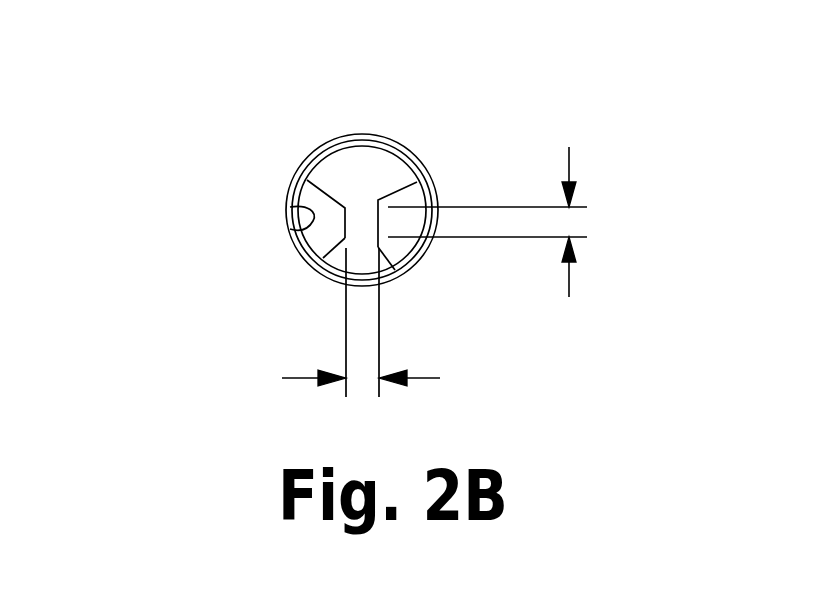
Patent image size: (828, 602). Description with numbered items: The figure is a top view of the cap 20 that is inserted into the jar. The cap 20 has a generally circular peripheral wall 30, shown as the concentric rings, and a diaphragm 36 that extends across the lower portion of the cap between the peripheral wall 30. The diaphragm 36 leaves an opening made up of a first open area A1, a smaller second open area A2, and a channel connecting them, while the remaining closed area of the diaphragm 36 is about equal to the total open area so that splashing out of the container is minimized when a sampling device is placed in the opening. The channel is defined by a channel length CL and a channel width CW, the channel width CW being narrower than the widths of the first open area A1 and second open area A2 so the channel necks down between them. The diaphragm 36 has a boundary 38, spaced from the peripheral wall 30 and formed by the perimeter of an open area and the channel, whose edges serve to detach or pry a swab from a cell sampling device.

The cap 20 is at (290, 183).
The peripheral wall 30 is at (290, 228).
The diaphragm 36 is at (323, 237).
The boundary 38 is at (345, 208).
The first open area A1 is at (325, 171).
The second open area A2 is at (380, 252).
The channel length CL is at (569, 147).
The channel width CW is at (337, 380).